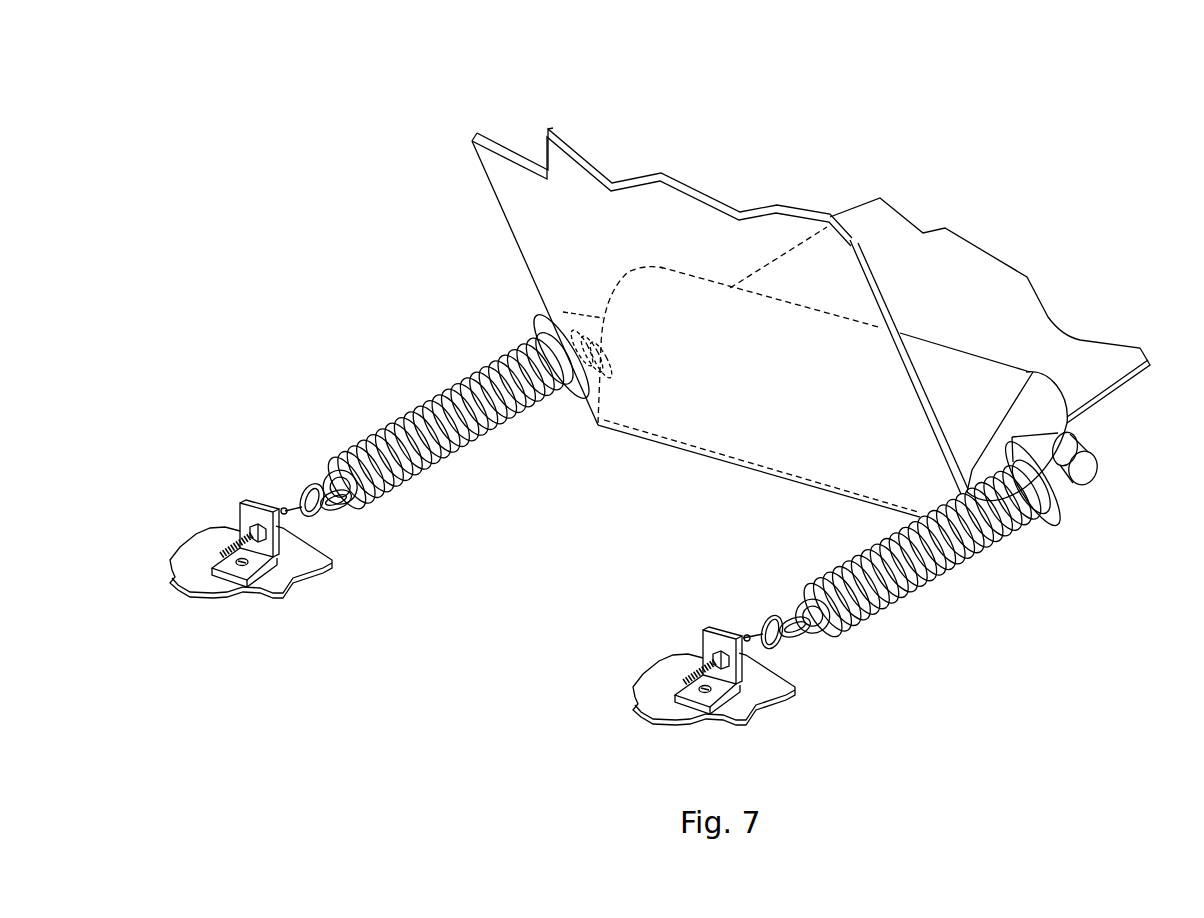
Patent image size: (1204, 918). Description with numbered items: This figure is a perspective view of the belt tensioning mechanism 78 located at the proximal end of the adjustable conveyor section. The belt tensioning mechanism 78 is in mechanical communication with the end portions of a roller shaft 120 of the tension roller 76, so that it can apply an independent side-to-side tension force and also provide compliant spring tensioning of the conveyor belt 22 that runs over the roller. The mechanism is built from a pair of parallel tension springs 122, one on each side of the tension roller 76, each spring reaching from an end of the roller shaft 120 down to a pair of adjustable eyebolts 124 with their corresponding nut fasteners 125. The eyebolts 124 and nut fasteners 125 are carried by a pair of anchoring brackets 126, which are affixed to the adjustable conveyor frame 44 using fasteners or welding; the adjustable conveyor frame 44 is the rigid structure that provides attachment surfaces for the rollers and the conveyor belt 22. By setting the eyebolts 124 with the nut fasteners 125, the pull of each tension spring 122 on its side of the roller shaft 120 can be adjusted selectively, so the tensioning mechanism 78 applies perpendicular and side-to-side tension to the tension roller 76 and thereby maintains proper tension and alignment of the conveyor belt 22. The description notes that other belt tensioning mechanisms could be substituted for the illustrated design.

The belt tensioning mechanism 78 is at (255, 137).
The conveyor belt 22 is at (848, 278).
The tension roller 76 is at (998, 371).
The roller shaft 120 is at (562, 312).
The tension spring 122 is at (463, 442).
The adjustable eyebolt 124 is at (240, 528).
The nut fastener 125 is at (250, 526).
The anchoring bracket 126 is at (232, 580).
The adjustable conveyor frame 44 is at (185, 583).